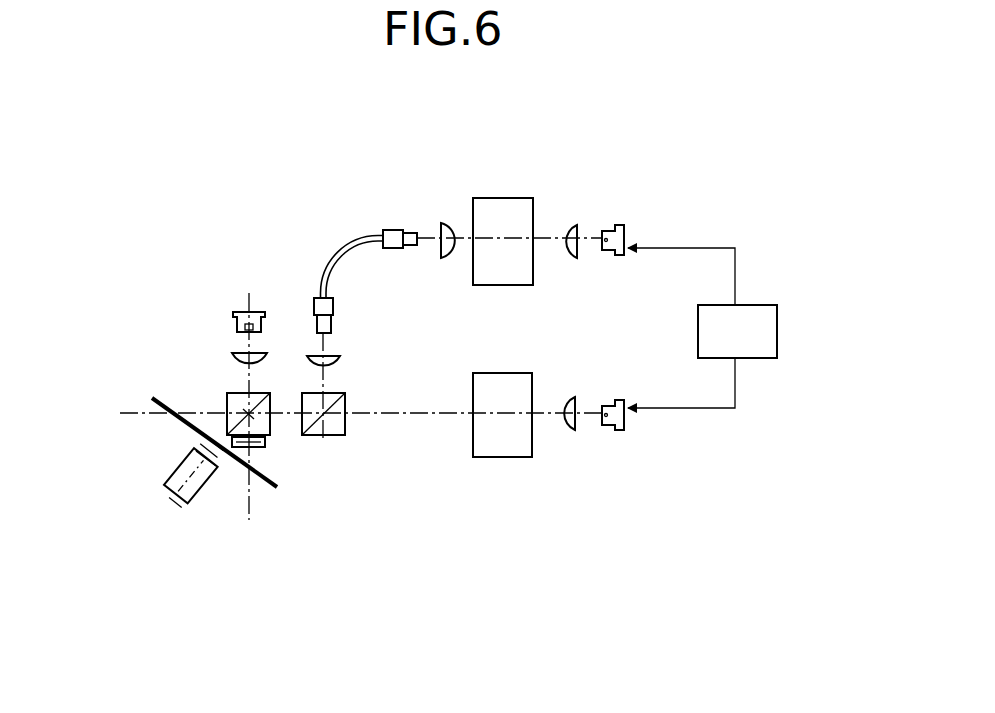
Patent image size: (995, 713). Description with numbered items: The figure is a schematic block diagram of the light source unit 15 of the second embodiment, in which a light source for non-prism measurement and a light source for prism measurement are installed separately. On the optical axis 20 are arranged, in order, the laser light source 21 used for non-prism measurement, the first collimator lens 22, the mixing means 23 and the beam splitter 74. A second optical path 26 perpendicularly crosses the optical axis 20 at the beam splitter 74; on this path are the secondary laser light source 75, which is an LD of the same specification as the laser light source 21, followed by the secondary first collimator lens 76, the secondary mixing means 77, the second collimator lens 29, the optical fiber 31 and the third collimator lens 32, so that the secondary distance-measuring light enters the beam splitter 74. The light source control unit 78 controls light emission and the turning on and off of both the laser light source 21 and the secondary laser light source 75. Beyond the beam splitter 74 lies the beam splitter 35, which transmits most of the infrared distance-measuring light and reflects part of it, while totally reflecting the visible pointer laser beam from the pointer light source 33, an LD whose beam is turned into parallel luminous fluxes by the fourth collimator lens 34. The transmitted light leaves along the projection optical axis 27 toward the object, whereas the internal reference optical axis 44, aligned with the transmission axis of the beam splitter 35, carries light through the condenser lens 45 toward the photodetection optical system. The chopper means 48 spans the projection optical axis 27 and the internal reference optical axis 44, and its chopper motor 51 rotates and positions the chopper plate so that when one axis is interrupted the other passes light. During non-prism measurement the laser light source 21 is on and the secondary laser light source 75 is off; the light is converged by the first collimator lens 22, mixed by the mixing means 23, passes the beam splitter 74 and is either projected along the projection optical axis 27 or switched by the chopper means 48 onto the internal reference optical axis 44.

The light source unit 15 is at (420, 505).
The optical axis 20 is at (417, 415).
The laser light source 21 is at (618, 400).
The first collimator lens 22 is at (570, 431).
The mixing means 23 is at (507, 373).
The second optical path 26 is at (340, 322).
The projection optical axis 27 is at (130, 414).
The second collimator lens 29 is at (446, 223).
The optical fiber 31 is at (350, 238).
The third collimator lens 32 is at (341, 363).
The pointer light source 33 is at (250, 312).
The fourth collimator lens 34 is at (231, 358).
The beam splitter 35 is at (226, 398).
The internal reference optical axis 44 is at (252, 500).
The condenser lens 45 is at (265, 445).
The chopper means 48 is at (226, 490).
The chopper motor 51 is at (190, 503).
The beam splitter 74 is at (346, 405).
The secondary laser light source 75 is at (624, 228).
The secondary first collimator lens 76 is at (574, 225).
The secondary mixing means 77 is at (507, 198).
The light source control unit 78 is at (760, 305).